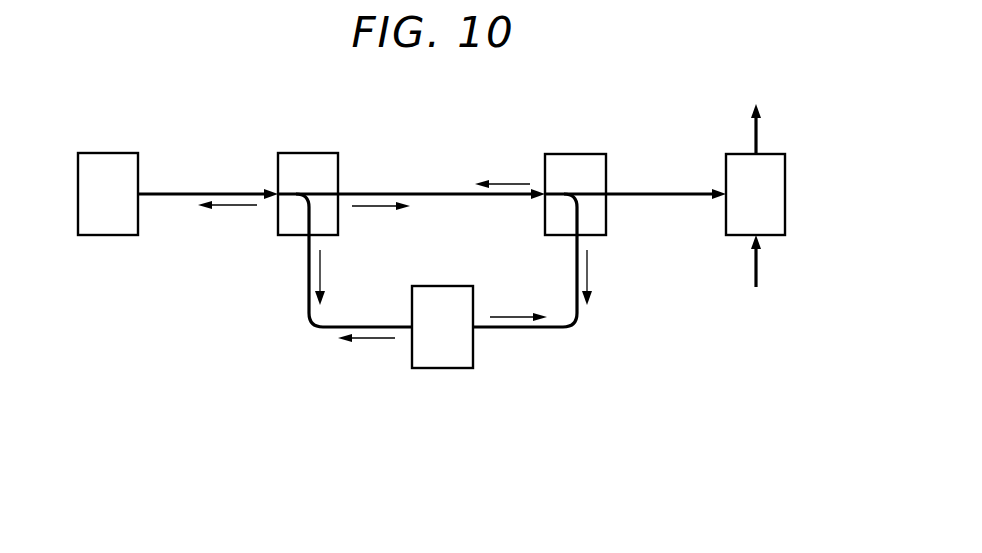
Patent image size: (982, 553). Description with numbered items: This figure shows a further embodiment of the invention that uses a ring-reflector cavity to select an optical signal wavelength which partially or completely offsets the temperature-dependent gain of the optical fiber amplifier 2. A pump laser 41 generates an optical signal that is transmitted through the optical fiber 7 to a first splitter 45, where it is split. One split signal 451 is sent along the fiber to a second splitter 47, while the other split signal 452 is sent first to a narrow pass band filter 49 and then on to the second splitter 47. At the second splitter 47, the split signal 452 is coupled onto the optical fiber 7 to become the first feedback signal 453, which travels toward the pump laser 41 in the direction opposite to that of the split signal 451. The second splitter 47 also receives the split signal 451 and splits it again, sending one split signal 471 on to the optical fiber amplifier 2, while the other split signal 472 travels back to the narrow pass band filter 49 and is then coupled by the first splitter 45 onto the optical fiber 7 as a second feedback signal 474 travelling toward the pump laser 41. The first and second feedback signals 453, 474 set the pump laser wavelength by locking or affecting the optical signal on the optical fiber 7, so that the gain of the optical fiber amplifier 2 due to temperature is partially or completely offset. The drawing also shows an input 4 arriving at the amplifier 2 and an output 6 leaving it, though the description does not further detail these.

The pump laser 41 is at (109, 152).
The optical fiber 7 is at (164, 190).
The second feedback signal 474 is at (226, 190).
The first splitter 45 is at (308, 152).
The split signal 451 is at (379, 192).
The first feedback signal 453 is at (504, 199).
The second splitter 47 is at (577, 152).
The split signal 471 is at (667, 194).
The optical fiber amplifier 2 is at (786, 196).
The output signal 6 is at (756, 133).
The input signal 4 is at (756, 272).
The split signal 452 is at (309, 268).
The split signal 472 is at (375, 324).
The narrow pass band filter 49 is at (443, 370).